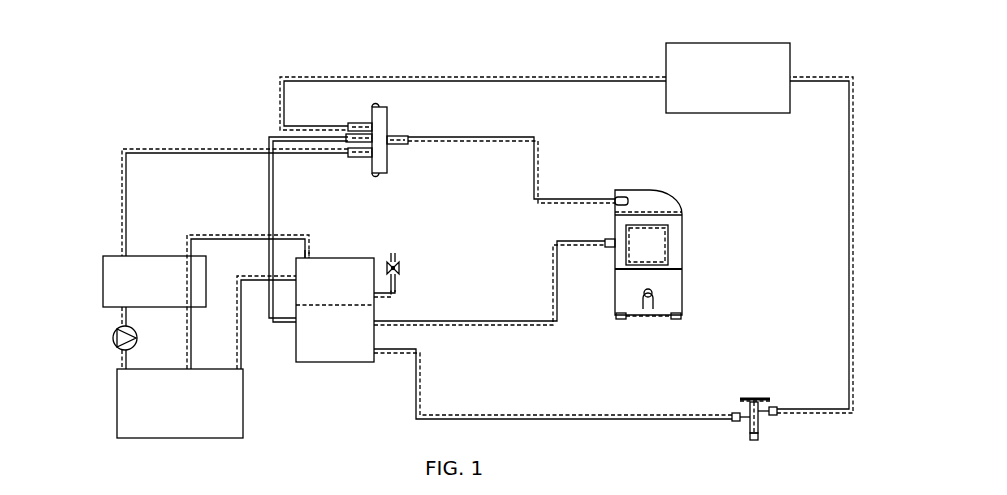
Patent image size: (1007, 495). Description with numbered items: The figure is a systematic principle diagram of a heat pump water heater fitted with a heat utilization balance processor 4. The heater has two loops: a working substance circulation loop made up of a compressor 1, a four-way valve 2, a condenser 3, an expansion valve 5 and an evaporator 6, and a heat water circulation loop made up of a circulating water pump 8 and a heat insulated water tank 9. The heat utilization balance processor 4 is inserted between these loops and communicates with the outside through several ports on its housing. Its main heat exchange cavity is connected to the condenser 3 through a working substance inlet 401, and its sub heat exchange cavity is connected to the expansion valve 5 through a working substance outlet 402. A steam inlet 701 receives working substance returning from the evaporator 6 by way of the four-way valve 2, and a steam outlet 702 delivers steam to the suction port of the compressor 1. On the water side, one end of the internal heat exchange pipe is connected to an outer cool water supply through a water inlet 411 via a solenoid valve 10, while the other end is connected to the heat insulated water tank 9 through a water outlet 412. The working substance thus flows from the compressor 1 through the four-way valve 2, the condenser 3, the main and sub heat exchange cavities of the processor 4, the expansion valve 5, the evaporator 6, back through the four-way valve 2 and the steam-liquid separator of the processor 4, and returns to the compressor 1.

The compressor 1 is at (663, 231).
The four-way valve 2 is at (338, 94).
The condenser 3 is at (131, 261).
The heat utilization balance processor 4 is at (340, 318).
The expansion valve 5 is at (747, 375).
The evaporator 6 is at (735, 106).
The circulating water pump 8 is at (96, 311).
The heat insulated water tank 9 is at (149, 383).
The solenoid valve 10 is at (407, 257).
The working substance inlet 401 is at (308, 248).
The working substance outlet 402 is at (553, 384).
The water inlet 411 is at (409, 298).
The water outlet 412 is at (253, 277).
The steam inlet 701 is at (295, 327).
The steam outlet 702 is at (489, 302).